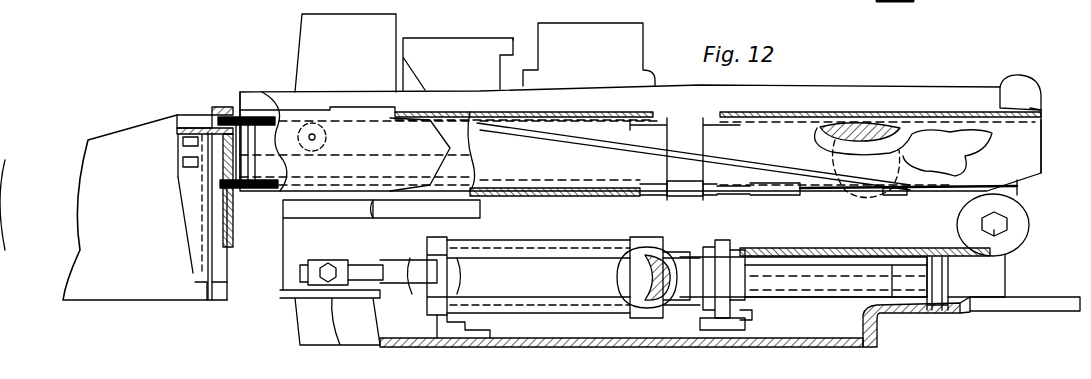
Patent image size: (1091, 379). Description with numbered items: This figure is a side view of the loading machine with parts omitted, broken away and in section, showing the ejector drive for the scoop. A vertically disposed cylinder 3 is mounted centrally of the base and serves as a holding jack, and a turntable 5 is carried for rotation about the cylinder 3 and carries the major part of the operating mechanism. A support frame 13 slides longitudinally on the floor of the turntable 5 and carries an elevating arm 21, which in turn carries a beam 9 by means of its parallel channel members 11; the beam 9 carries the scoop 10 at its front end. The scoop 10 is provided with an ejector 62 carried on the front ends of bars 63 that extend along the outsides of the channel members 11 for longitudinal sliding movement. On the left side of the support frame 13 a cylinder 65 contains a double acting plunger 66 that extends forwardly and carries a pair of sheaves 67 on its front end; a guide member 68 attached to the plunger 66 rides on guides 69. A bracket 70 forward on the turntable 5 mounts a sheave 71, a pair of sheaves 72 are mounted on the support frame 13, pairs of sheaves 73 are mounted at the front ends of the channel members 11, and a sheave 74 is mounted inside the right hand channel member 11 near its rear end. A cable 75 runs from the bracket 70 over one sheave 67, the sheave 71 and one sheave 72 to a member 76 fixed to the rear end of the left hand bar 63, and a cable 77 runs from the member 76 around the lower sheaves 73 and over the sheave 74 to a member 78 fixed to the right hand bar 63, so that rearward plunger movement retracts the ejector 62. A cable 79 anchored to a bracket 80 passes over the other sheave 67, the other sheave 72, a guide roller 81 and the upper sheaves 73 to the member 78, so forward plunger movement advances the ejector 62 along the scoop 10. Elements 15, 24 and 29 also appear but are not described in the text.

The cylinder 3 is at (645, 46).
The turntable 5 is at (975, 310).
The beam 9 is at (1048, 122).
The scoop 10 is at (145, 303).
The channel members 11 is at (1045, 143).
The support frame 13 is at (1007, 266).
The upper member 15 is at (525, 20).
The elevating arm 21 is at (876, 94).
The block 24 is at (298, 58).
The block 29 is at (427, 44).
The ejector 62 is at (207, 215).
The bars 63 is at (580, 198).
The cylinder 65 is at (843, 298).
The double acting plunger 66 is at (910, 273).
The sheaves 67 is at (625, 272).
The guide member 68 is at (644, 240).
The guides 69 is at (544, 256).
The bracket 70 is at (375, 268).
The sheave 71 is at (418, 250).
The sheaves 72 is at (1025, 222).
The sheaves 73 is at (217, 178).
The sheave 74 is at (835, 126).
The cable 75 is at (765, 202).
The member 76 is at (696, 196).
The cable 77 is at (903, 152).
The member 78 is at (680, 140).
The cable 79 is at (737, 172).
The bracket 80 is at (748, 312).
The guide roller 81 is at (295, 128).